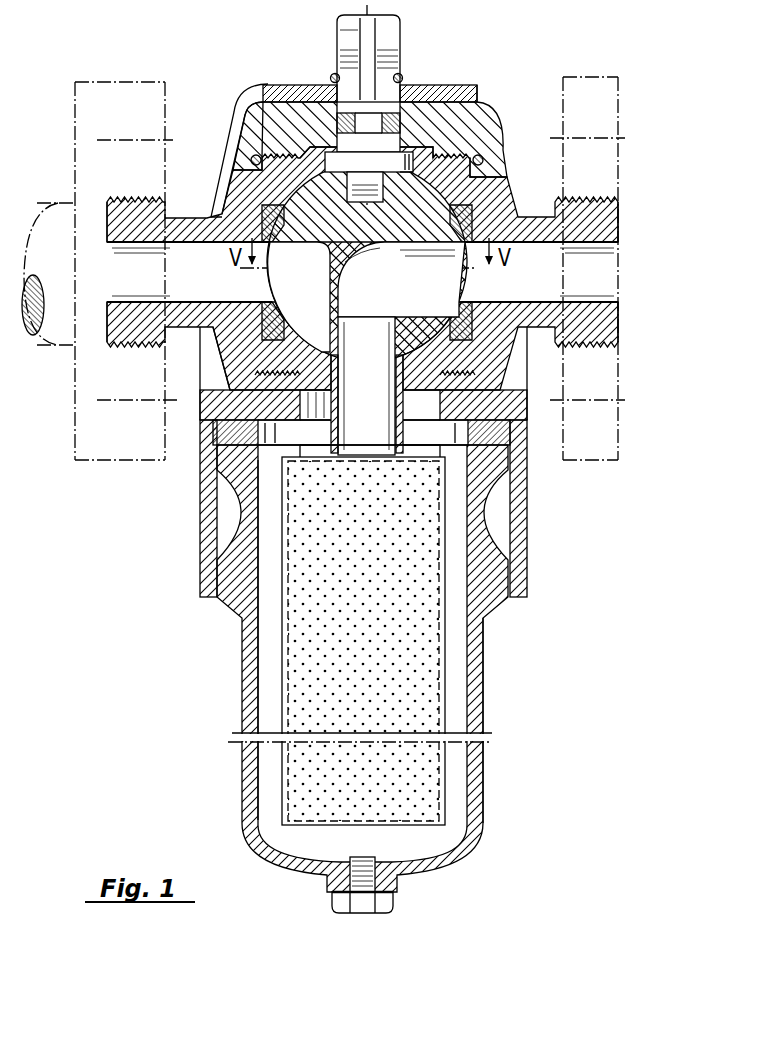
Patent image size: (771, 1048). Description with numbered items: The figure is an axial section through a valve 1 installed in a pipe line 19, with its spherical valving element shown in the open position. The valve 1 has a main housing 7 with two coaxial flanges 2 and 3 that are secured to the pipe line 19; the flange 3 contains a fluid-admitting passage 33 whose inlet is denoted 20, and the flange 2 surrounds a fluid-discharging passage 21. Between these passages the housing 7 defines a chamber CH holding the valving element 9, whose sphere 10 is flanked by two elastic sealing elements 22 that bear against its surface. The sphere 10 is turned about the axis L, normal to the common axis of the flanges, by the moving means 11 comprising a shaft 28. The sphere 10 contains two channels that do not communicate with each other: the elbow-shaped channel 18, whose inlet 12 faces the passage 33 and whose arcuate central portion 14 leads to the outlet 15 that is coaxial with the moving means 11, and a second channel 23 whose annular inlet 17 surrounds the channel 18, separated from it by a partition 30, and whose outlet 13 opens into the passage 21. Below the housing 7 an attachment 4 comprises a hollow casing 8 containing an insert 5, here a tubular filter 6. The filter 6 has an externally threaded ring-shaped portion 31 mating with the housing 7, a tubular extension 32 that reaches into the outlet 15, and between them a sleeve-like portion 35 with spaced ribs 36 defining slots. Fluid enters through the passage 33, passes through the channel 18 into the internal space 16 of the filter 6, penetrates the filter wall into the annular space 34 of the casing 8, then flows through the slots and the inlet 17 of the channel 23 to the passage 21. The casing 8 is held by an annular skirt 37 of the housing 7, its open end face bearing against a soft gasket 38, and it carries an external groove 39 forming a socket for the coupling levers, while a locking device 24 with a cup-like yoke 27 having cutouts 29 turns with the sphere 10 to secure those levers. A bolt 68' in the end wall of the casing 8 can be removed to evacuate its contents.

The valve 1 is at (600, 31).
The flange 2 is at (110, 215).
The flange 3 is at (612, 212).
The attachment 4 is at (371, 668).
The insert 5 is at (279, 671).
The tubular filter 6 is at (404, 635).
The housing 7 is at (491, 99).
The casing 8 is at (487, 626).
The valving element 9 is at (419, 176).
The sphere 10 is at (298, 225).
The moving means 11 is at (404, 59).
The inlet 12 is at (472, 282).
The outlet 13 is at (266, 282).
The arcuate central portion 14 is at (367, 308).
The outlet 15 is at (377, 359).
The internal space 16 is at (425, 778).
The inlet 17 is at (300, 357).
The channel 18 is at (427, 295).
The pipe line 19 is at (61, 287).
The inlet 20 is at (605, 262).
The fluid-discharging passage 21 is at (118, 258).
The sealing elements 22 is at (262, 330).
The channel 23 is at (314, 302).
The locking device 24 is at (296, 79).
The yoke 27 is at (456, 86).
The shaft 28 is at (392, 33).
The cutouts 29 is at (231, 115).
The partition 30 is at (328, 345).
The threaded ring-shaped portion 31 is at (440, 438).
The tubular extension 32 is at (400, 358).
The fluid-admitting passage 33 is at (596, 280).
The annular space 34 is at (458, 665).
The sleeve-like portion 35 is at (352, 455).
The ribs 36 is at (313, 422).
The annular skirt 37 is at (208, 573).
The gasket 38 is at (215, 430).
The groove 39 is at (484, 505).
The bolt 68' is at (415, 885).
The axis L is at (352, 33).
The chamber CH is at (224, 167).